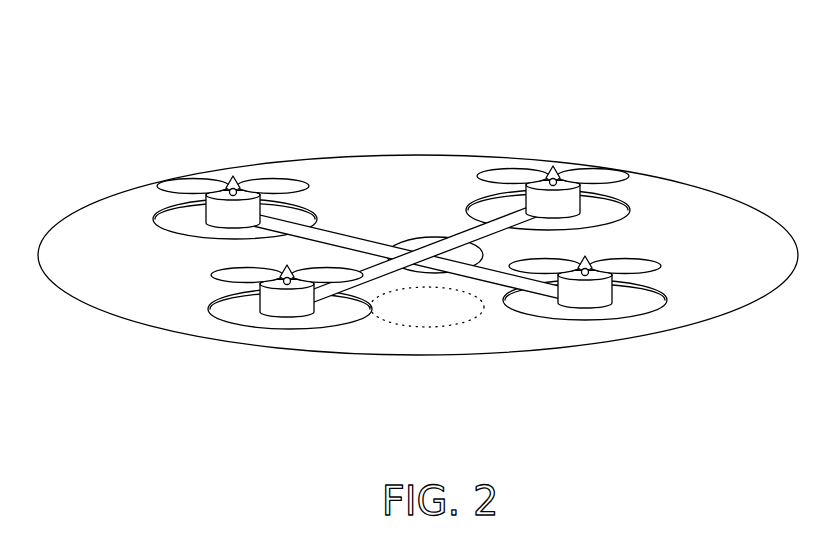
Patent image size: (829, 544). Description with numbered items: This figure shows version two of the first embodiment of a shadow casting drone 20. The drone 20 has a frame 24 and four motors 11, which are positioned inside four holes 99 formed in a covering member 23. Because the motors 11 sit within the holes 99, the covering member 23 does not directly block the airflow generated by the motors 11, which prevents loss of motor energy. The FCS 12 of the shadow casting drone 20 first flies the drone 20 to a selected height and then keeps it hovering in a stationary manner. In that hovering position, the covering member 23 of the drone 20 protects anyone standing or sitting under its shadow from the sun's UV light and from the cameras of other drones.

The shadow casting drone 20 is at (418, 228).
The motors 11 is at (433, 241).
The FCS 12 is at (406, 364).
The covering member 23 is at (418, 210).
The frame 24 is at (416, 200).
The holes 99 is at (412, 257).